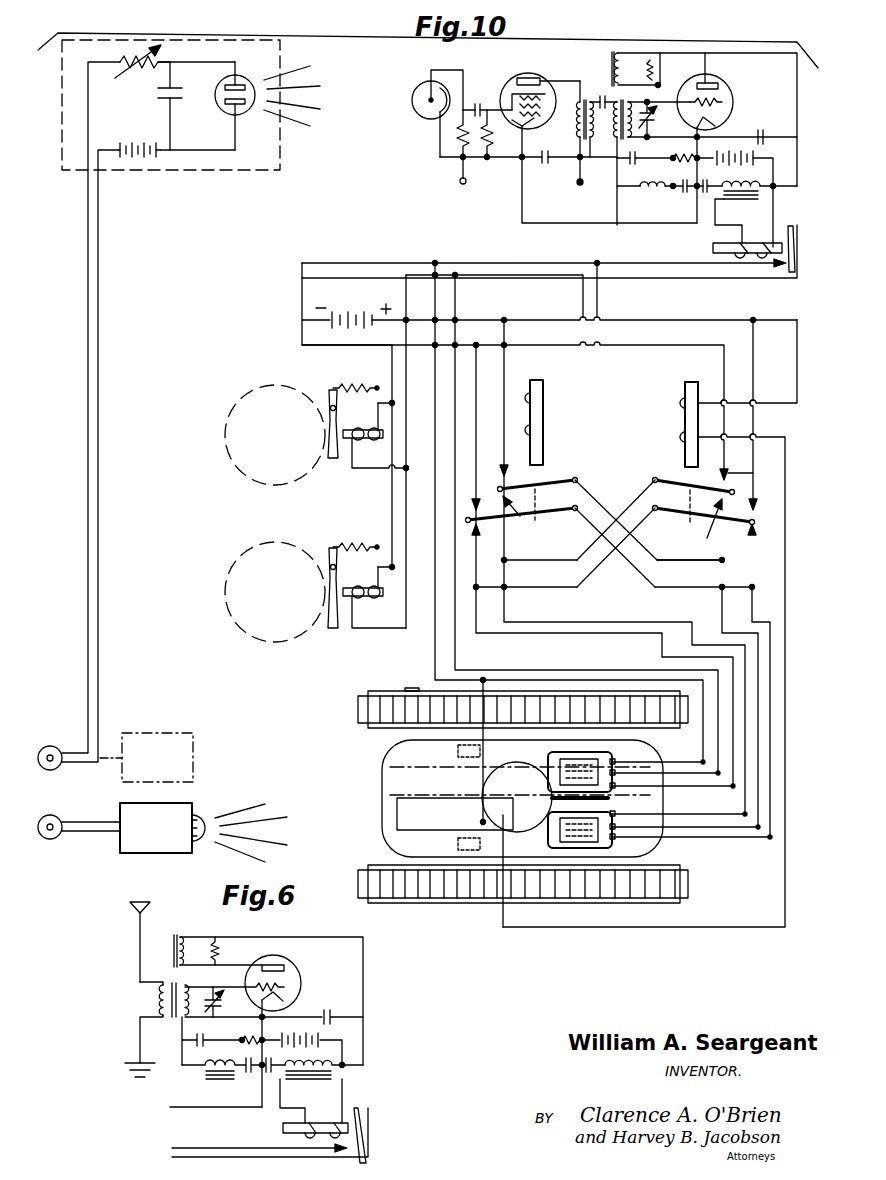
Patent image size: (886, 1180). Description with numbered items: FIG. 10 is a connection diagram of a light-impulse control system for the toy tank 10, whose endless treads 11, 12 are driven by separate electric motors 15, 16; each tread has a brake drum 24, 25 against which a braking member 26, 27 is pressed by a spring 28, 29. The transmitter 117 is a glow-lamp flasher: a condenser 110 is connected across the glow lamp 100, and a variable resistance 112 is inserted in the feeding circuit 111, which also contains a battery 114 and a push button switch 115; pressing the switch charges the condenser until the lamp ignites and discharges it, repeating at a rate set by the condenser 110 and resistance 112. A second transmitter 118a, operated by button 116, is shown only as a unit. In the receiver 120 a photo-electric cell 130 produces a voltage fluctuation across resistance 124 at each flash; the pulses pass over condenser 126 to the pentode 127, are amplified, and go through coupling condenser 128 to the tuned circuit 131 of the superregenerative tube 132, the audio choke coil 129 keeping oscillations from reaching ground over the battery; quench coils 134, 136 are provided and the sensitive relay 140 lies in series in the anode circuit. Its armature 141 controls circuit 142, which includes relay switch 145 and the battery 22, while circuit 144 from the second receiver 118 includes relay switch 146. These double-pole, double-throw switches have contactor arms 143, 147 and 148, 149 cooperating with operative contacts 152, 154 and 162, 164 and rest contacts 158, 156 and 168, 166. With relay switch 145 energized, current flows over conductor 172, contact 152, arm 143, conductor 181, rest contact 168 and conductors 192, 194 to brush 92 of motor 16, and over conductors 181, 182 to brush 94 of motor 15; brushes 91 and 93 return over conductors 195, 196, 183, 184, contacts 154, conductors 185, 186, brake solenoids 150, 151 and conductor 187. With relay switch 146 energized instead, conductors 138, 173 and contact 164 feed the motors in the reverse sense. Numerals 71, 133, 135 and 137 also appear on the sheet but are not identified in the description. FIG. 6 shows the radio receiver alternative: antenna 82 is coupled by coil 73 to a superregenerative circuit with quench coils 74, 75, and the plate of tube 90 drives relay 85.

In FIG. 10, the tank 10 is at (472, 915).
In FIG. 10, the endless tread 11 is at (540, 898).
In FIG. 10, the endless tread 12 is at (358, 713).
In FIG. 10, the electric motor 15 is at (608, 850).
In FIG. 10, the electric motor 16 is at (612, 790).
In FIG. 10, the battery 22 is at (350, 305).
In FIG. 10, the brake drum 24 is at (258, 484).
In FIG. 10, the brake drum 25 is at (273, 643).
In FIG. 10, the braking member 26 is at (465, 695).
In FIG. 10, the braking member 27 is at (447, 913).
In FIG. 10, the spring 28 is at (487, 742).
In FIG. 10, the spring 29 is at (492, 855).
In FIG. 10, the left brush 91 is at (565, 768).
In FIG. 10, the right brush 92 is at (677, 798).
In FIG. 10, the left brush 93 is at (556, 850).
In FIG. 10, the right brush 94 is at (580, 850).
In FIG. 10, the glow lamp 100 is at (222, 108).
In FIG. 10, the condenser 110 is at (172, 92).
In FIG. 10, the feeding circuit 111 is at (88, 112).
In FIG. 10, the variable resistance 112 is at (120, 70).
In FIG. 10, the battery 114 is at (141, 160).
In FIG. 10, the push button switch 115 is at (52, 755).
In FIG. 10, the button 116 is at (52, 839).
In FIG. 10, the transmitter 117 is at (226, 172).
In FIG. 10, the receiver 118 is at (382, 826).
In FIG. 10, the transmitter 118a is at (168, 853).
In FIG. 10, the receiver 120 is at (500, 213).
In FIG. 10, the resistance 124 is at (460, 138).
In FIG. 10, the condenser 126 is at (477, 103).
In FIG. 10, the pentode 127 is at (553, 85).
In FIG. 10, the coupling condenser 128 is at (602, 95).
In FIG. 10, the audio choke coil 129 is at (577, 137).
In FIG. 10, the photo-electric cell 130 is at (414, 112).
In FIG. 10, the tuned circuit 131 is at (620, 137).
In FIG. 10, the superregenerative tube 132 is at (725, 95).
In FIG. 10, the shaft 133 is at (481, 780).
In FIG. 10, the quench coil 134 is at (652, 190).
In FIG. 10, the conductor 135 is at (406, 600).
In FIG. 10, the quench coil 136 is at (756, 212).
In FIG. 10, the conductor 137 is at (443, 645).
In FIG. 10, the conductor 138 is at (540, 300).
In FIG. 10, the relay 140 is at (757, 246).
In FIG. 10, the armature 141 is at (803, 239).
In FIG. 10, the circuit 142 is at (652, 270).
In FIG. 10, the contactor arm 143 is at (553, 486).
In FIG. 10, the circuit 144 is at (786, 520).
In FIG. 10, the relay switch 145 is at (540, 428).
In FIG. 10, the relay switch 146 is at (683, 437).
In FIG. 10, the contactor arm 147 is at (575, 506).
In FIG. 10, the contactor arm 148 is at (672, 484).
In FIG. 10, the contactor arm 149 is at (704, 524).
In FIG. 10, the brake solenoid 150 is at (352, 430).
In FIG. 10, the brake solenoid 151 is at (465, 770).
In FIG. 10, the operative contact 152 is at (502, 464).
In FIG. 10, the operative contact 154 is at (474, 505).
In FIG. 10, the rest contact 156 is at (478, 528).
In FIG. 10, the rest contact 158 is at (522, 519).
In FIG. 10, the operative contact 162 is at (755, 466).
In FIG. 10, the operative contact 164 is at (764, 415).
In FIG. 10, the rest contact 166 is at (755, 528).
In FIG. 10, the rest contact 168 is at (700, 529).
In FIG. 10, the conductor 172 is at (505, 367).
In FIG. 10, the conductor 173 is at (757, 377).
In FIG. 10, the conductor 181 is at (668, 562).
In FIG. 10, the conductor 182 is at (758, 742).
In FIG. 10, the conductor 183 is at (740, 837).
In FIG. 10, the conductor 184 is at (640, 578).
In FIG. 10, the conductor 185 is at (477, 440).
In FIG. 10, the conductor 186 is at (628, 348).
In FIG. 10, the conductor 187 is at (390, 523).
In FIG. 10, the conductor 192 is at (585, 544).
In FIG. 10, the conductor 194 is at (645, 622).
In FIG. 10, the conductor 195 is at (733, 705).
In FIG. 10, the conductor 196 is at (562, 590).
In FIG. 6, the input transformer 71 is at (205, 940).
In FIG. 6, the coil 73 is at (172, 1022).
In FIG. 6, the quench coil 74 is at (262, 1059).
In FIG. 6, the quench coil 75 is at (321, 1091).
In FIG. 6, the antenna 82 is at (140, 946).
In FIG. 6, the relay 85 is at (283, 1127).
In FIG. 6, the tube 90 is at (296, 980).